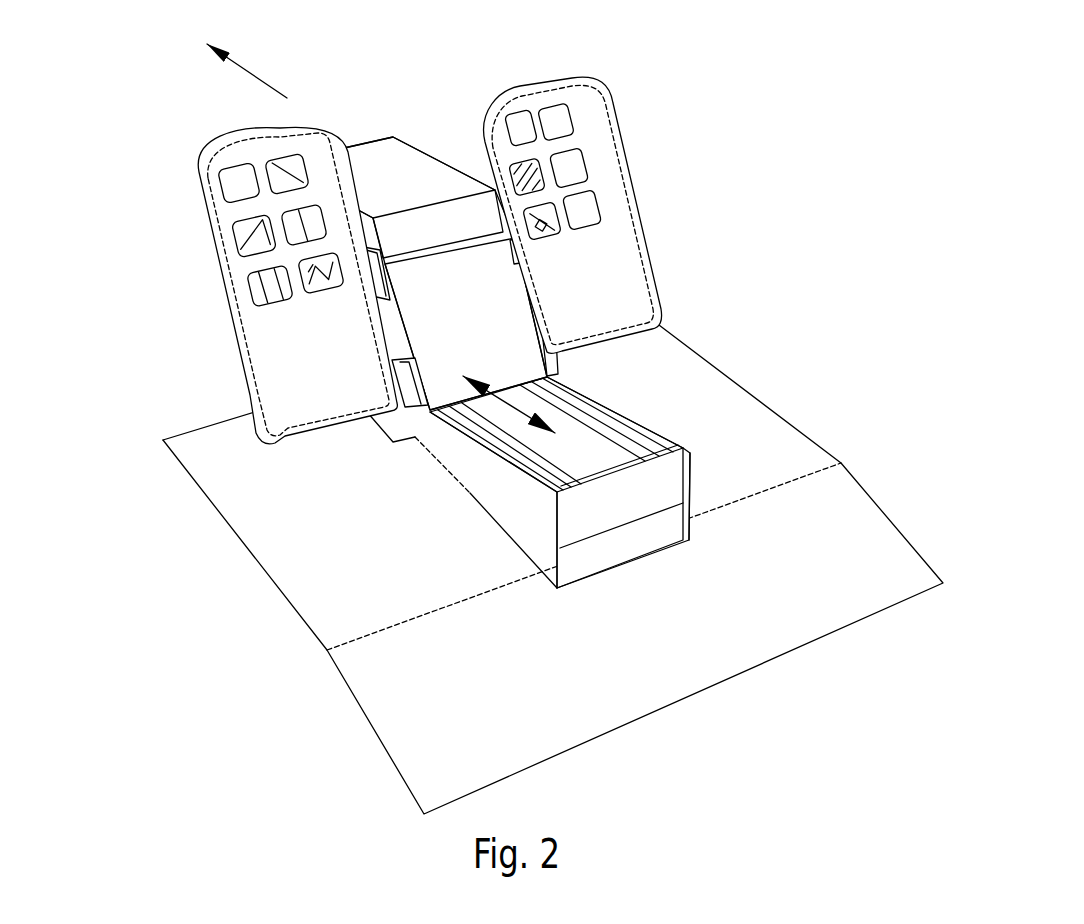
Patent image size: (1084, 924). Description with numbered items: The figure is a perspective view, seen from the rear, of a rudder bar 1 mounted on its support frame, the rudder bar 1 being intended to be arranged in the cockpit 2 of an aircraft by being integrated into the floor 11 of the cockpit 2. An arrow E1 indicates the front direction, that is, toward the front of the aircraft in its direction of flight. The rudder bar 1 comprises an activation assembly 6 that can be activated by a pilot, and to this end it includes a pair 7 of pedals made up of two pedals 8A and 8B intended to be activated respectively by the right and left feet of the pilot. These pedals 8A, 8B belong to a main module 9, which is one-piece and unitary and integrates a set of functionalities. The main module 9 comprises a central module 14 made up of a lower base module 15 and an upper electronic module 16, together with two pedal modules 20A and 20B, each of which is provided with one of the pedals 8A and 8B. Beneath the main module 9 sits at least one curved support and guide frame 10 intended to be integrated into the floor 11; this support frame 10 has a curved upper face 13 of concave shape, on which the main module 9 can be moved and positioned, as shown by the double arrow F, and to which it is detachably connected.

The rudder bar 1 is at (228, 261).
The cockpit 2 is at (677, 215).
The activation assembly 6 is at (241, 261).
The pair of pedals 7 is at (464, 235).
The pedal 8A is at (622, 173).
The pedal 8B is at (216, 267).
The main module 9 is at (502, 211).
The curved support frame 10 is at (669, 426).
The floor 11 is at (190, 474).
The curved upper face 13 is at (595, 434).
The central module 14 is at (420, 132).
The lower base module 15 is at (510, 300).
The upper electronic module 16 is at (438, 160).
The pedal module 20A is at (648, 202).
The pedal module 20B is at (215, 314).
The arrow E1 is at (248, 70).
The double arrow F is at (506, 406).